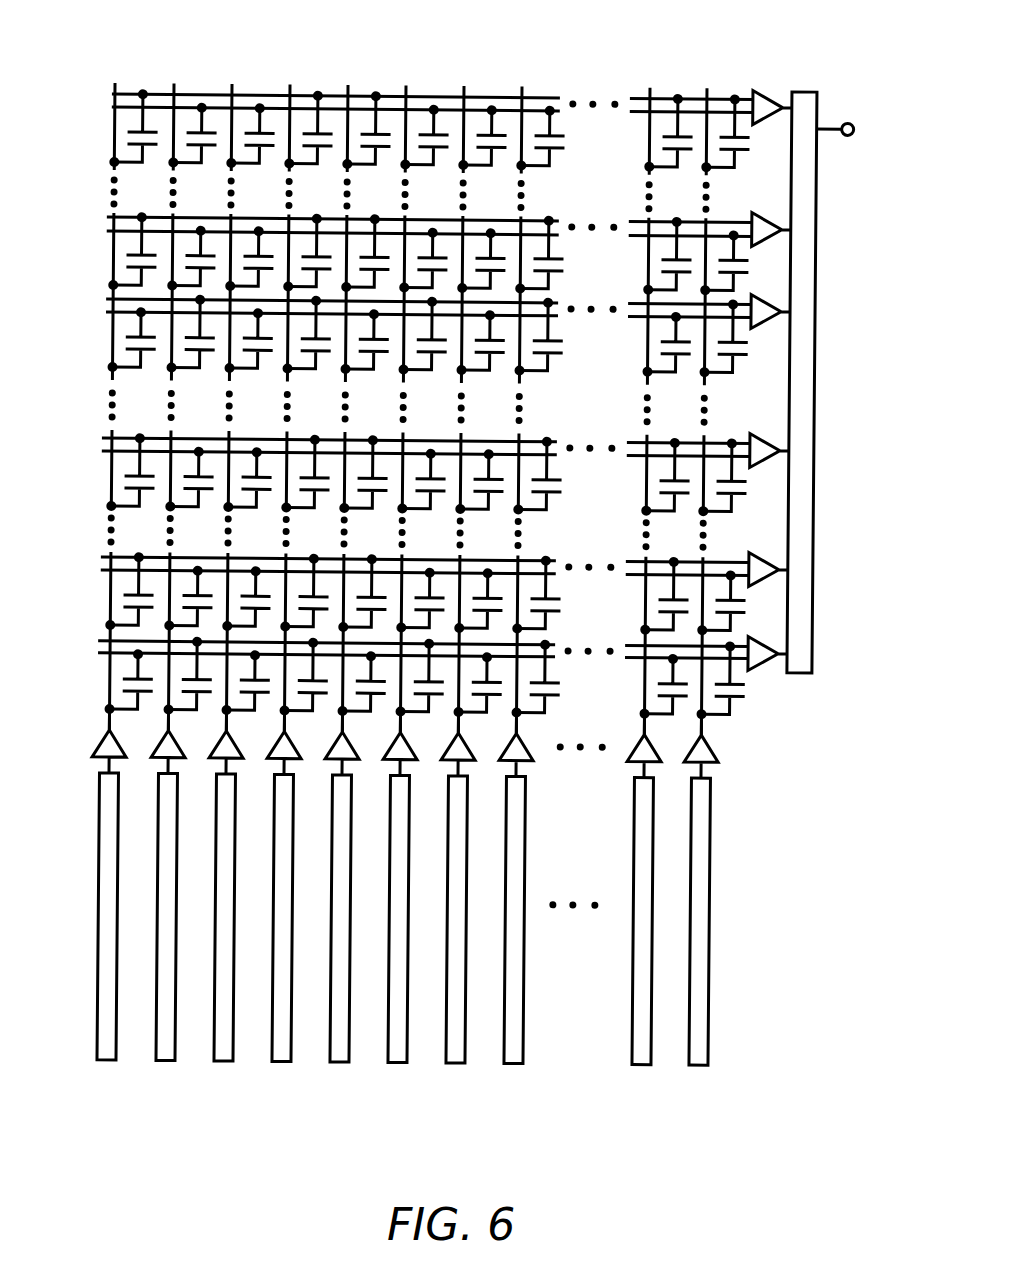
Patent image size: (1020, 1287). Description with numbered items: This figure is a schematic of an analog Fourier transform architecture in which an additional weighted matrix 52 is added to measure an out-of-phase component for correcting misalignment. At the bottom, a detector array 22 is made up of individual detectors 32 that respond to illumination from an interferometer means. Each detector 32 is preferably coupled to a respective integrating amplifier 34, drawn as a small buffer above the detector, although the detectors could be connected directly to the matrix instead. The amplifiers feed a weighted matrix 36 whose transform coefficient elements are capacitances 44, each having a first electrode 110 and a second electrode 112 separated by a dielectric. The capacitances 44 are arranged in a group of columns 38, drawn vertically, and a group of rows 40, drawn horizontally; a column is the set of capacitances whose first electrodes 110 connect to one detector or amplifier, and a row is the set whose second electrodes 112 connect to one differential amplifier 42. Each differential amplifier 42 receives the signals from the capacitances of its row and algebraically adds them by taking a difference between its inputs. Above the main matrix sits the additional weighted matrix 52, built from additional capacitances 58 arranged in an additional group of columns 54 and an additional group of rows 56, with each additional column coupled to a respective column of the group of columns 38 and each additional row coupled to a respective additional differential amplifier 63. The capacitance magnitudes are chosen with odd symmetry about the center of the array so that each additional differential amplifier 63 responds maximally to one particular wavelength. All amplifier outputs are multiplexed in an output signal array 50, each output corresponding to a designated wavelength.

The detector array 22 is at (386, 917).
The detector 32 is at (97, 925).
The integrating amplifier 34 is at (99, 745).
The weighted matrix 36 is at (411, 470).
The group of columns 38 is at (78, 598).
The group of rows 40 is at (92, 450).
The differential amplifier 42 is at (760, 431).
The capacitance 44 is at (202, 484).
The output signal array 50 is at (805, 86).
The additional weighted matrix 52 is at (394, 380).
The additional group of columns 54 is at (95, 150).
The additional group of rows 56 is at (327, 52).
The additional capacitance 58 is at (202, 352).
The additional differential amplifier 63 is at (771, 86).
The first electrode 110 is at (110, 706).
The second electrode 112 is at (112, 642).